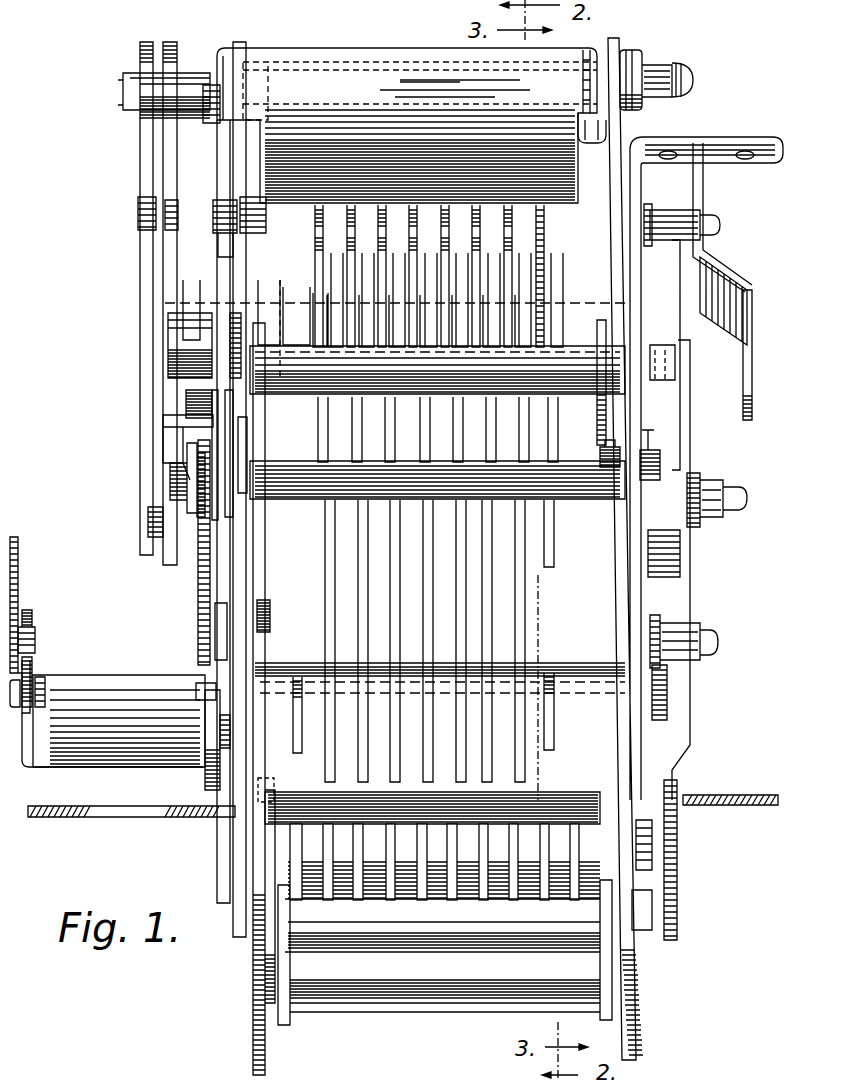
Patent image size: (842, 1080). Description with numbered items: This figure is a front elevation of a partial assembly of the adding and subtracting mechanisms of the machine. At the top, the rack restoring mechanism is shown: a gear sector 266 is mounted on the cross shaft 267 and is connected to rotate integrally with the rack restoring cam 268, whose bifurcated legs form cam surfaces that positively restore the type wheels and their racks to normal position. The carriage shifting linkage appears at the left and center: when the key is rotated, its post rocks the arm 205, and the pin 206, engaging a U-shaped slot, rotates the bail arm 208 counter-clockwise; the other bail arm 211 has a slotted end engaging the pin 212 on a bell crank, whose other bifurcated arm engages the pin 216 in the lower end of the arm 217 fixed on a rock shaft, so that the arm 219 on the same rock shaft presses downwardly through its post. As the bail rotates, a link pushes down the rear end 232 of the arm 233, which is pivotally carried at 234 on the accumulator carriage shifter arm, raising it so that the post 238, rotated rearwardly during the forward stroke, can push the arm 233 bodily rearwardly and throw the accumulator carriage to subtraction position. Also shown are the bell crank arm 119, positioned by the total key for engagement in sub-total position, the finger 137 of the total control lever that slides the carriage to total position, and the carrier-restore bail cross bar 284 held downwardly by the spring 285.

The cross shaft 267 is at (123, 90).
The rack restoring cam 268 is at (140, 238).
The gear sector 266 is at (163, 262).
The post 238 is at (186, 412).
The rear end of arm 232 is at (177, 440).
The pivot 234 is at (192, 487).
The arm 205 is at (20, 580).
The pin 206 is at (37, 640).
The bail arm 208 is at (38, 722).
The arm 233 is at (198, 572).
The bail arm 211 is at (196, 690).
The pin 212 is at (205, 772).
The arm 217 is at (265, 583).
The pin 216 is at (270, 622).
The arm 219 is at (597, 402).
The cross bar 284 is at (600, 464).
The spring 285 is at (658, 480).
The bell crank arm 119 is at (752, 389).
The finger 137 is at (678, 918).